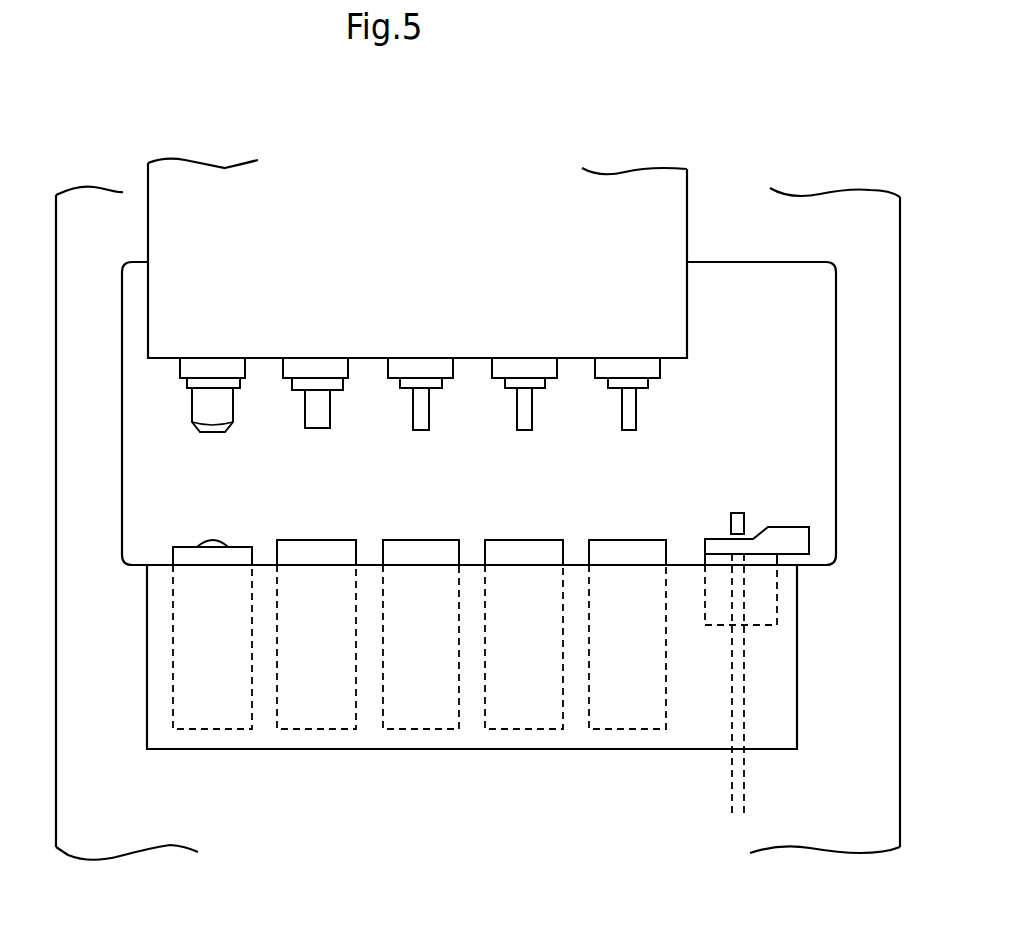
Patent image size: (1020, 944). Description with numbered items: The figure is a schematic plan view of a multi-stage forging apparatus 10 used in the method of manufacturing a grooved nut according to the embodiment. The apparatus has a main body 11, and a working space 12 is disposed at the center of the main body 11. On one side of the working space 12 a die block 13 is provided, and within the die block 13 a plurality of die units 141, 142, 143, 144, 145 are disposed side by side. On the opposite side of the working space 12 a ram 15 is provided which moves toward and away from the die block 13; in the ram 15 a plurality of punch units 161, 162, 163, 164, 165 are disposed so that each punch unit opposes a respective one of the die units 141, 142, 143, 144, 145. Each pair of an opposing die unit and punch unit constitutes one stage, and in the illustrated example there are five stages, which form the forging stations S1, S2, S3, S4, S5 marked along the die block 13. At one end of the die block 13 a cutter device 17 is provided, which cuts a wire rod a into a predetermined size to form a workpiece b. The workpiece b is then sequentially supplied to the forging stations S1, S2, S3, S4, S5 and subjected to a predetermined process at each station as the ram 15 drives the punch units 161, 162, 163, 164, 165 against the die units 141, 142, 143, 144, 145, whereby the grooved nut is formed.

The forging apparatus 10 is at (822, 112).
The main body 11 is at (842, 218).
The working space 12 is at (733, 318).
The die block 13 is at (797, 658).
The die unit 141 is at (641, 729).
The die unit 142 is at (537, 729).
The die unit 143 is at (433, 729).
The die unit 144 is at (329, 729).
The die unit 145 is at (225, 729).
The ram 15 is at (618, 195).
The punch unit 161 is at (655, 398).
The punch unit 162 is at (552, 398).
The punch unit 163 is at (447, 398).
The punch unit 164 is at (343, 398).
The punch unit 165 is at (240, 398).
The cutter device 17 is at (784, 525).
The wire rod a is at (745, 776).
The workpiece b is at (740, 513).
The forging station S1 is at (627, 533).
The forging station S2 is at (524, 533).
The forging station S3 is at (421, 533).
The forging station S4 is at (316, 533).
The forging station S5 is at (212, 533).